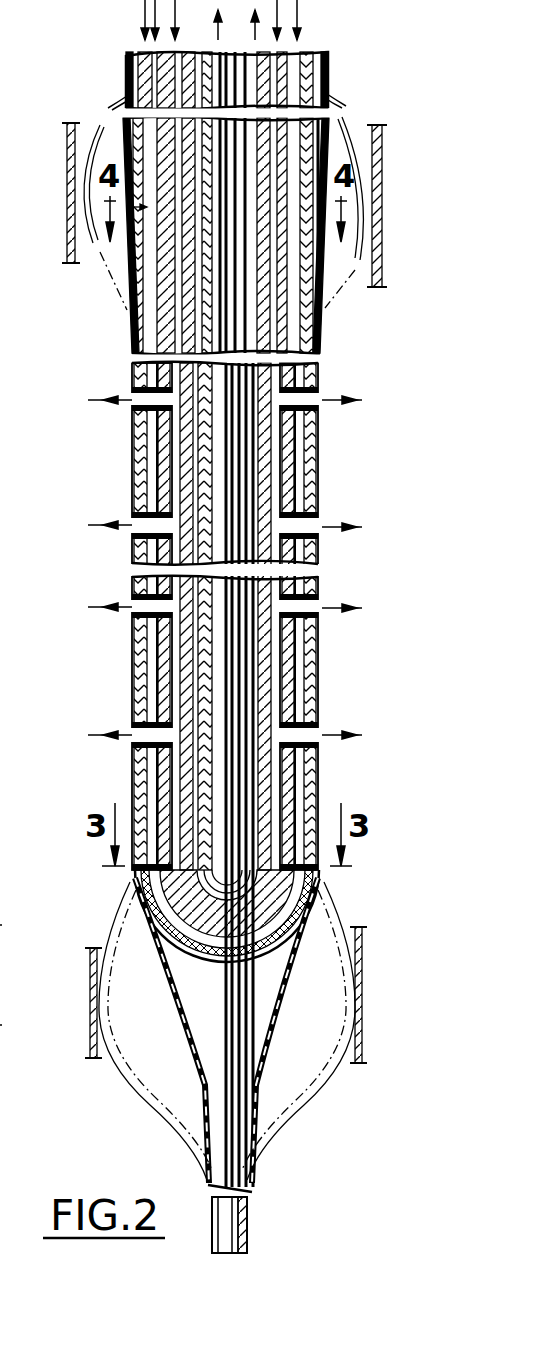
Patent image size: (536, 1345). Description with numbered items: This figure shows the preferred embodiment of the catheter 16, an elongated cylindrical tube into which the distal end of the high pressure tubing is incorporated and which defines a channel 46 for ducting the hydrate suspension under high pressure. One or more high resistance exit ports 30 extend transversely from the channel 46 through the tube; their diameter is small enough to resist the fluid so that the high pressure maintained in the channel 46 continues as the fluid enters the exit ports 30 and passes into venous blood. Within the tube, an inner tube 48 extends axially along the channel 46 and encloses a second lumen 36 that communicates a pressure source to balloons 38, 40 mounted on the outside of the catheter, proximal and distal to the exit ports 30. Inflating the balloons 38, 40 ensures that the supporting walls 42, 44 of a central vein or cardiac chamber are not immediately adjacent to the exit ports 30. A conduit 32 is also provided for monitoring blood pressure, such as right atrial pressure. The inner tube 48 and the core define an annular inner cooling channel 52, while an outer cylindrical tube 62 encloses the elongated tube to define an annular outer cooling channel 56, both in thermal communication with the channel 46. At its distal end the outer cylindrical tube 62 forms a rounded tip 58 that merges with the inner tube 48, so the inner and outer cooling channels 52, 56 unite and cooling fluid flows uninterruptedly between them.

The catheter 16 is at (112, 58).
The exit ports 30 is at (318, 400).
The balloon 38 is at (263, 1137).
The balloon 40 is at (320, 302).
The supporting wall 42 is at (375, 123).
The supporting wall 44 is at (66, 262).
The channel 46 is at (177, 698).
The inner tube 48 is at (250, 896).
The annular inner cooling channel 52 is at (198, 688).
The annular outer cooling channel 56 is at (158, 717).
The rounded tip 58 is at (178, 957).
The outer cylindrical tube 62 is at (308, 787).
The conduit 32 is at (4, 925).
The second lumen 36 is at (4, 1025).